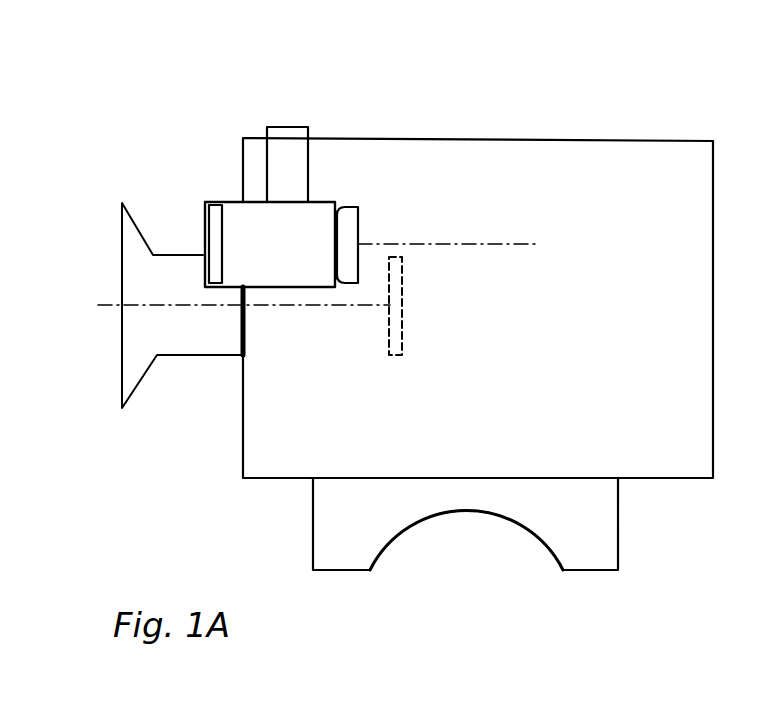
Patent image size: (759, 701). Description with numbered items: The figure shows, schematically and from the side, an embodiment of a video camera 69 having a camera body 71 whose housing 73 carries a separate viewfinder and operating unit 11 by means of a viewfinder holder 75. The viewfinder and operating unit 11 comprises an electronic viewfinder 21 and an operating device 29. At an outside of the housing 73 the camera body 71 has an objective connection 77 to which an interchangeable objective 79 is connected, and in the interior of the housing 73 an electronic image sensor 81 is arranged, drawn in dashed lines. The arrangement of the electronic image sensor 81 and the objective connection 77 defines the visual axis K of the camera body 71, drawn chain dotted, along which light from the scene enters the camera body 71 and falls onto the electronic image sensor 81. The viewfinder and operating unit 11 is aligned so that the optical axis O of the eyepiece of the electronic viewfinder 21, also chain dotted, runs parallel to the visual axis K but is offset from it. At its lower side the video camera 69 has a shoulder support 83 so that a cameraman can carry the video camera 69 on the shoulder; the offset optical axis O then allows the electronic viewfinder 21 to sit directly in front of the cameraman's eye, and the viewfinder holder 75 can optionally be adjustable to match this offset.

The viewfinder and operating unit 11 is at (225, 186).
The electronic viewfinder 21 is at (347, 204).
The operating device 29 is at (215, 230).
The video camera 69 is at (557, 103).
The camera body 71 is at (467, 125).
The housing 73 is at (657, 346).
The viewfinder holder 75 is at (281, 145).
The objective connection 77 is at (242, 330).
The interchangeable objective 79 is at (179, 343).
The electronic image sensor 81 is at (395, 337).
The shoulder support 83 is at (590, 515).